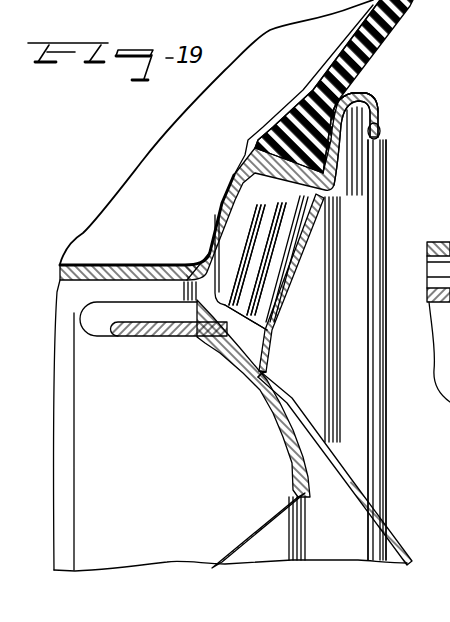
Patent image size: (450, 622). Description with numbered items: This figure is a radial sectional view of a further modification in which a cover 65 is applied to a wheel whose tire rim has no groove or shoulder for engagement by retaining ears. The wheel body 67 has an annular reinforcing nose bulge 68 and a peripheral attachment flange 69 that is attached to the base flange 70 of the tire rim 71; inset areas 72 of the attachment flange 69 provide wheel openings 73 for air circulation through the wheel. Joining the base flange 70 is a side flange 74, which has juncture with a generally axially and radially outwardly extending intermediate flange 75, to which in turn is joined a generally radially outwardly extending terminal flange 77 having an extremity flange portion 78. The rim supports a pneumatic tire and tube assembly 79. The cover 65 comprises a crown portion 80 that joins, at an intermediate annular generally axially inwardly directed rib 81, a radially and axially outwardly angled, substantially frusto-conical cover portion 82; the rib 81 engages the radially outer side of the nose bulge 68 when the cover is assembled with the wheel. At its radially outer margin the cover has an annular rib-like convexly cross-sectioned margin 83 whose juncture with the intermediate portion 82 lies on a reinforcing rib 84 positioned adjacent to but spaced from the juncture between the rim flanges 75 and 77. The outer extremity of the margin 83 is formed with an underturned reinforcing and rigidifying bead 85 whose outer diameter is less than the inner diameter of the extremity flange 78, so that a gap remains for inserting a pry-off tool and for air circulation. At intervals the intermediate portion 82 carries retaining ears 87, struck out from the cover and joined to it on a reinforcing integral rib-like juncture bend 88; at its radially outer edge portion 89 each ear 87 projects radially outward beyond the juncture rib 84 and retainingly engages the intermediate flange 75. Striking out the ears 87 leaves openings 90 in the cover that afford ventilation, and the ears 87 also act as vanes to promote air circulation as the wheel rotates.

The cover 65 is at (392, 468).
The wheel body 67 is at (213, 551).
The annular reinforcing nose bulge 68 is at (308, 493).
The peripheral attachment flange 69 is at (62, 463).
The base flange 70 is at (110, 276).
The tire rim 71 is at (58, 275).
The inset areas 72 is at (155, 337).
The wheel openings 73 is at (137, 292).
The side flange 74 is at (214, 211).
The intermediate flange 75 is at (258, 146).
The terminal flange 77 is at (333, 143).
The extremity flange portion 78 is at (372, 97).
The pneumatic tire and tube assembly 79 is at (382, 50).
The crown portion 80 is at (392, 532).
The intermediate annular axially inwardly directed rib 81 is at (261, 371).
The intermediate frusto-conical cover portion 82 is at (266, 349).
The rib-like convexly cross-sectioned margin 83 is at (372, 220).
The reinforcing rib 84 is at (330, 207).
The underturned reinforcing and rigidifying bead 85 is at (381, 130).
The retaining ears 87 is at (265, 267).
The reinforcing integral rib-like juncture bend 88 is at (285, 297).
The radially outer edge portion 89 is at (267, 190).
The openings 90 is at (267, 324).